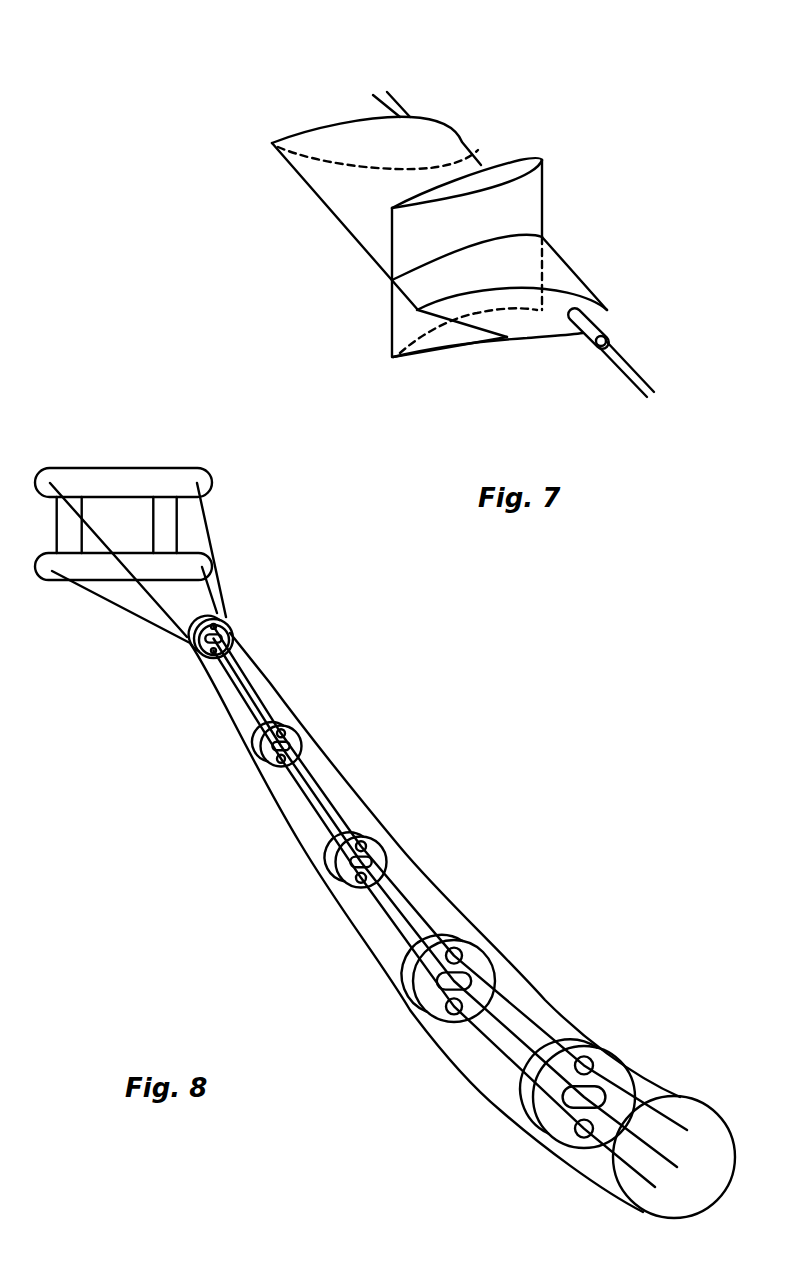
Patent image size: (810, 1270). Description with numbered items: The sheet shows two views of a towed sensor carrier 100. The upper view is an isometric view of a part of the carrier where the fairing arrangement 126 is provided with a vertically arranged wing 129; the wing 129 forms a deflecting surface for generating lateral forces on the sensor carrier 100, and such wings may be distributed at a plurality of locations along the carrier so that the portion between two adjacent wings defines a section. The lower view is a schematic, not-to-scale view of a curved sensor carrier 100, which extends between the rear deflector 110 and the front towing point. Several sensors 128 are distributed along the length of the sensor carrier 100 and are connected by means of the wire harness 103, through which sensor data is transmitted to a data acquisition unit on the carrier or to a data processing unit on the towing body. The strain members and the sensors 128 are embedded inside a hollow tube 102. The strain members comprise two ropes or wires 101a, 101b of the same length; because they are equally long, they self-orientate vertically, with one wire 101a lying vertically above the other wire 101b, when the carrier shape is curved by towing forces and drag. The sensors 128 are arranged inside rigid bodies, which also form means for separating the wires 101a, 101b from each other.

In FIG. 7, the fairing arrangement 126 is at (413, 135).
In FIG. 7, the wing 129 is at (520, 170).
In FIG. 8, the deflector 110 is at (142, 467).
In FIG. 8, the sensor carrier 100 is at (393, 894).
In FIG. 8, the hollow tube 102 is at (443, 900).
In FIG. 8, the wire harness 103 is at (490, 1025).
In FIG. 8, the wire 101a is at (405, 898).
In FIG. 8, the wire 101b is at (295, 793).
In FIG. 8, the sensor 128 is at (233, 641).